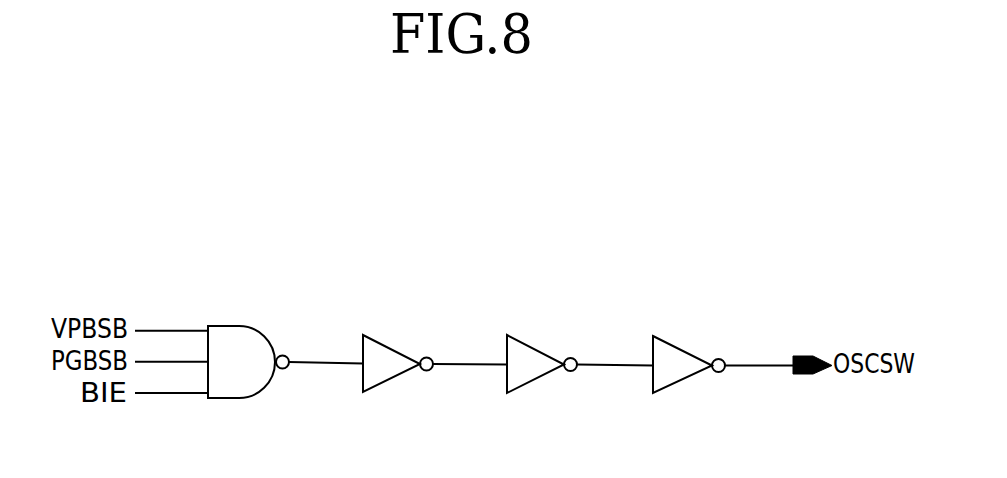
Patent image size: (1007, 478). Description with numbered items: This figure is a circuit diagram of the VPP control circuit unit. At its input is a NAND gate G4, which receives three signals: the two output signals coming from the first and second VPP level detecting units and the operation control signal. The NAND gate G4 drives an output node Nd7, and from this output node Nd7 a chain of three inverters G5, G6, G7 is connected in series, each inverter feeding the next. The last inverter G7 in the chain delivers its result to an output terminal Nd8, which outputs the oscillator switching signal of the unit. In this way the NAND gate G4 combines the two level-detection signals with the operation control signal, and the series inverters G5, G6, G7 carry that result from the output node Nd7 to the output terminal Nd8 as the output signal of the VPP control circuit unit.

The NAND gate G4 is at (248, 377).
The inverter G5 is at (398, 379).
The inverter G6 is at (542, 379).
The inverter G7 is at (689, 379).
The output node Nd7 is at (337, 362).
The output terminal Nd8 is at (757, 365).